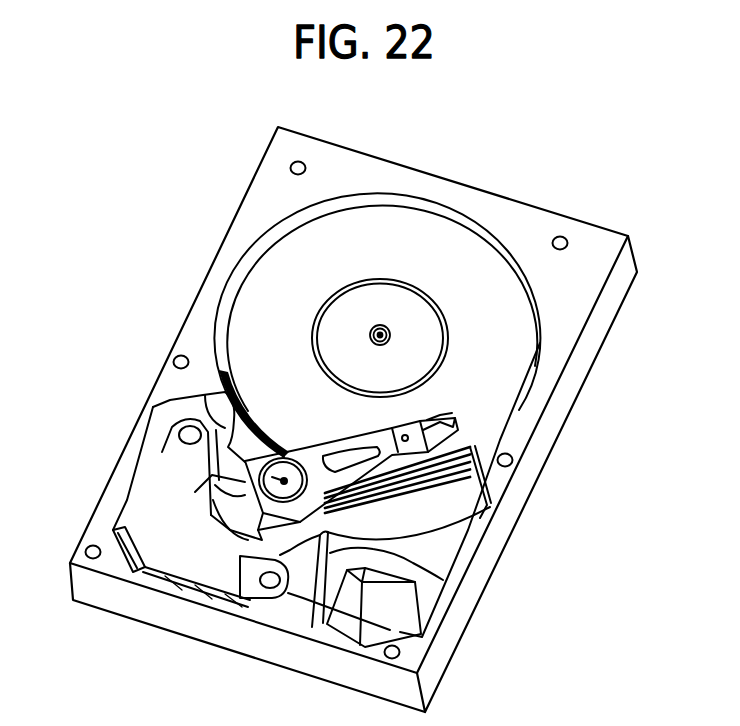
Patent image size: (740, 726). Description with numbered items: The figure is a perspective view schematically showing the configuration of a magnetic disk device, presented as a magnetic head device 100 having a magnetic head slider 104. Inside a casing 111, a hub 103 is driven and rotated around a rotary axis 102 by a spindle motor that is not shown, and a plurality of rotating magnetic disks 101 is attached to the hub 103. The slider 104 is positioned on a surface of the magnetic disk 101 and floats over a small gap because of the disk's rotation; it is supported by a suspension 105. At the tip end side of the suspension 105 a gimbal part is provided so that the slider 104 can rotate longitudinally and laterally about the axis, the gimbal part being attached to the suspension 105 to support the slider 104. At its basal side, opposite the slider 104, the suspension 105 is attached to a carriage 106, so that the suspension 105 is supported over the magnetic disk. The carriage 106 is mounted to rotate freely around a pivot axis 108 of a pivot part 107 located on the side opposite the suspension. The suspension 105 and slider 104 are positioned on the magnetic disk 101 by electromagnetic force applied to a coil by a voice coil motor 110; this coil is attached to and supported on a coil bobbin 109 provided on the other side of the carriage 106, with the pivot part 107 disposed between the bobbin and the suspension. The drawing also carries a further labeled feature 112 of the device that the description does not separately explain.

The hard disk drive 100 is at (327, 140).
The magnetic disk 101 is at (487, 275).
The spindle 102 is at (377, 335).
The spindle motor hub 103 is at (378, 298).
The suspension 104 is at (447, 422).
The magnetic head slider 105 is at (427, 422).
The flexible printed circuit 106 is at (425, 447).
The voice coil motor 107 is at (400, 512).
The ramp 108 is at (200, 400).
The latch 109 is at (212, 475).
The base 110 is at (185, 468).
The housing 111 is at (500, 190).
The connector 112 is at (400, 557).